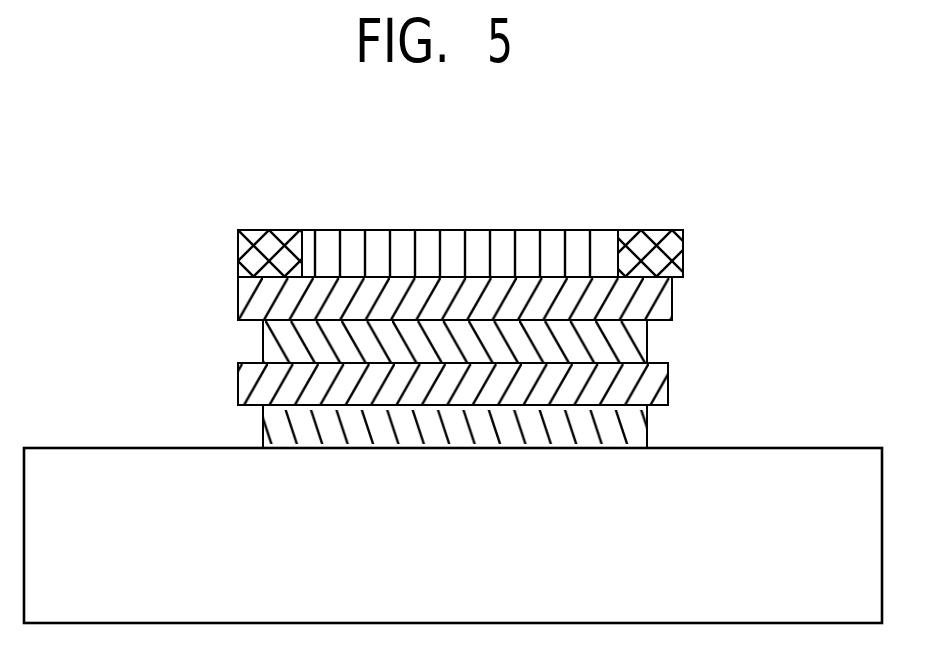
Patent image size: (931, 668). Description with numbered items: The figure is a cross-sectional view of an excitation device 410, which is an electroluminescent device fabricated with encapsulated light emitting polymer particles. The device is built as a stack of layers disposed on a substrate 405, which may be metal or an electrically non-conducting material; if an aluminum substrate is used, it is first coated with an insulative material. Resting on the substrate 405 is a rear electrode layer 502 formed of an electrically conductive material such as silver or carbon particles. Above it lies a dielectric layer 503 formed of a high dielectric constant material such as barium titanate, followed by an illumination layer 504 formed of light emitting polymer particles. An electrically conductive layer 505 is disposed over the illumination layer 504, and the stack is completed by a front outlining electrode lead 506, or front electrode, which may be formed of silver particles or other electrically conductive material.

The substrate 405 is at (457, 559).
The excitation device 410 is at (187, 319).
The rear electrode layer 502 is at (647, 428).
The dielectric layer 503 is at (668, 387).
The illumination layer 504 is at (647, 346).
The electrically conductive layer 505 is at (673, 303).
The front outlining electrode lead 506 is at (684, 232).